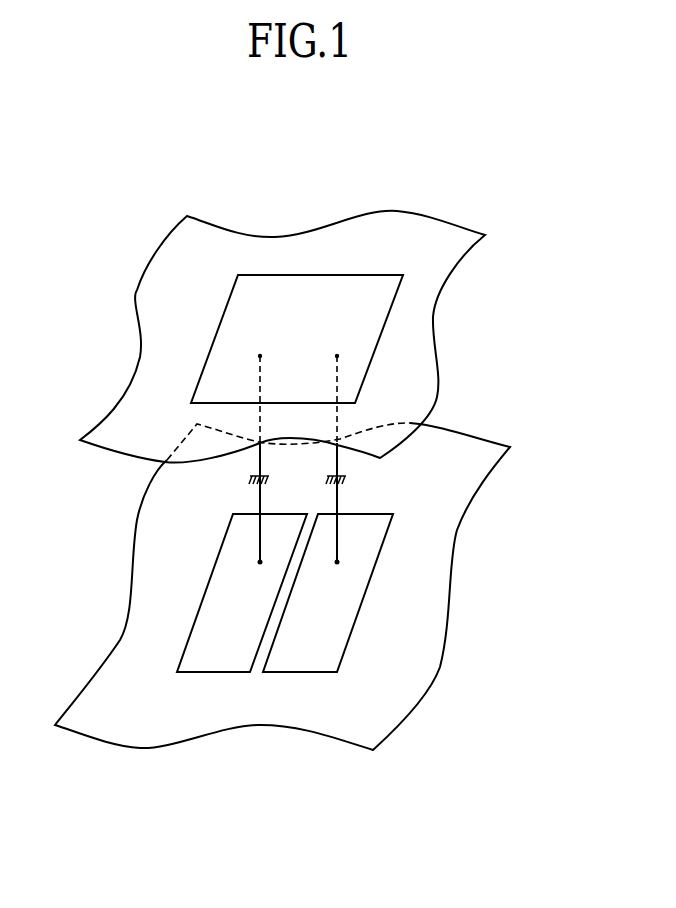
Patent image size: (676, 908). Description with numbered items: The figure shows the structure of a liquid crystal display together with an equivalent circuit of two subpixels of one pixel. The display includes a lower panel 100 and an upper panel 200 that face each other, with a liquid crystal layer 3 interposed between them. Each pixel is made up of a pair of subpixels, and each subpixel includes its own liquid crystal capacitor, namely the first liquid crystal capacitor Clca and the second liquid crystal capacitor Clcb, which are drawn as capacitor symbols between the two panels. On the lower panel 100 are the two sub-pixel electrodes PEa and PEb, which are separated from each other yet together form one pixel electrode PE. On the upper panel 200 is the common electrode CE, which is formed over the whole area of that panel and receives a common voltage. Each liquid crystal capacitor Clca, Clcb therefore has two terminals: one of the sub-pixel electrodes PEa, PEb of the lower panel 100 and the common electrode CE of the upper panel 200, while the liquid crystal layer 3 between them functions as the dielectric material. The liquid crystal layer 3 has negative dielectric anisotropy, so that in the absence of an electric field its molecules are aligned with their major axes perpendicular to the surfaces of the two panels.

The liquid crystal layer 3 is at (93, 550).
The lower panel 100 is at (455, 572).
The upper panel 200 is at (443, 355).
The common electrode CE is at (434, 318).
The pixel electrode PE is at (285, 812).
The first sub-pixel electrode PEa is at (212, 672).
The second sub-pixel electrode PEb is at (298, 672).
The first liquid crystal capacitor Clca is at (280, 459).
The second liquid crystal capacitor Clcb is at (356, 459).